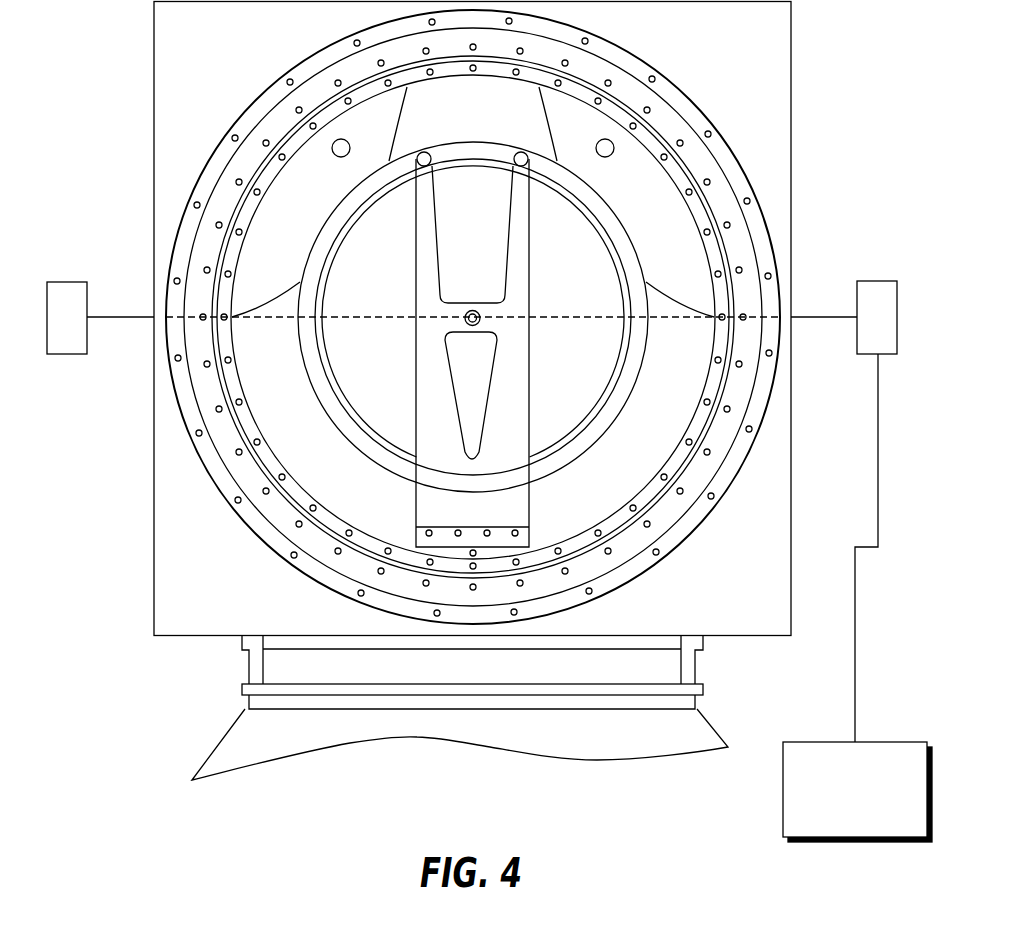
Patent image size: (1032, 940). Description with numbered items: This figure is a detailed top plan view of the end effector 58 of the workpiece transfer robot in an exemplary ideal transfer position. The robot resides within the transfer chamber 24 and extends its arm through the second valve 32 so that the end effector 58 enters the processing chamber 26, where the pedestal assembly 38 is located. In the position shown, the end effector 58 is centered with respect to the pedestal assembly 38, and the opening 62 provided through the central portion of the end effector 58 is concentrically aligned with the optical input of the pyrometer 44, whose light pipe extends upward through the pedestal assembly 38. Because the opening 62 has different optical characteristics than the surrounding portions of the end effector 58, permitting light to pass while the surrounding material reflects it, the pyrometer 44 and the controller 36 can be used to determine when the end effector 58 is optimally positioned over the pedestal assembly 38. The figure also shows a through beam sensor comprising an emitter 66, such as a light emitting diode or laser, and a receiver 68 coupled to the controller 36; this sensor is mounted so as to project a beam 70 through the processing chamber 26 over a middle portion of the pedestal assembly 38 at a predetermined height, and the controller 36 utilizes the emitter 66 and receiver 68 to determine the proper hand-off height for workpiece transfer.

The transfer chamber 24 is at (718, 728).
The processing chamber 26 is at (793, 58).
The second valve 32 is at (247, 668).
The controller 36 is at (874, 742).
The pedestal assembly 38 is at (620, 218).
The pyrometer 44 is at (482, 322).
The end effector 58 is at (530, 500).
The opening 62 is at (463, 316).
The emitter 66 is at (63, 282).
The receiver 68 is at (880, 279).
The beam 70 is at (100, 318).